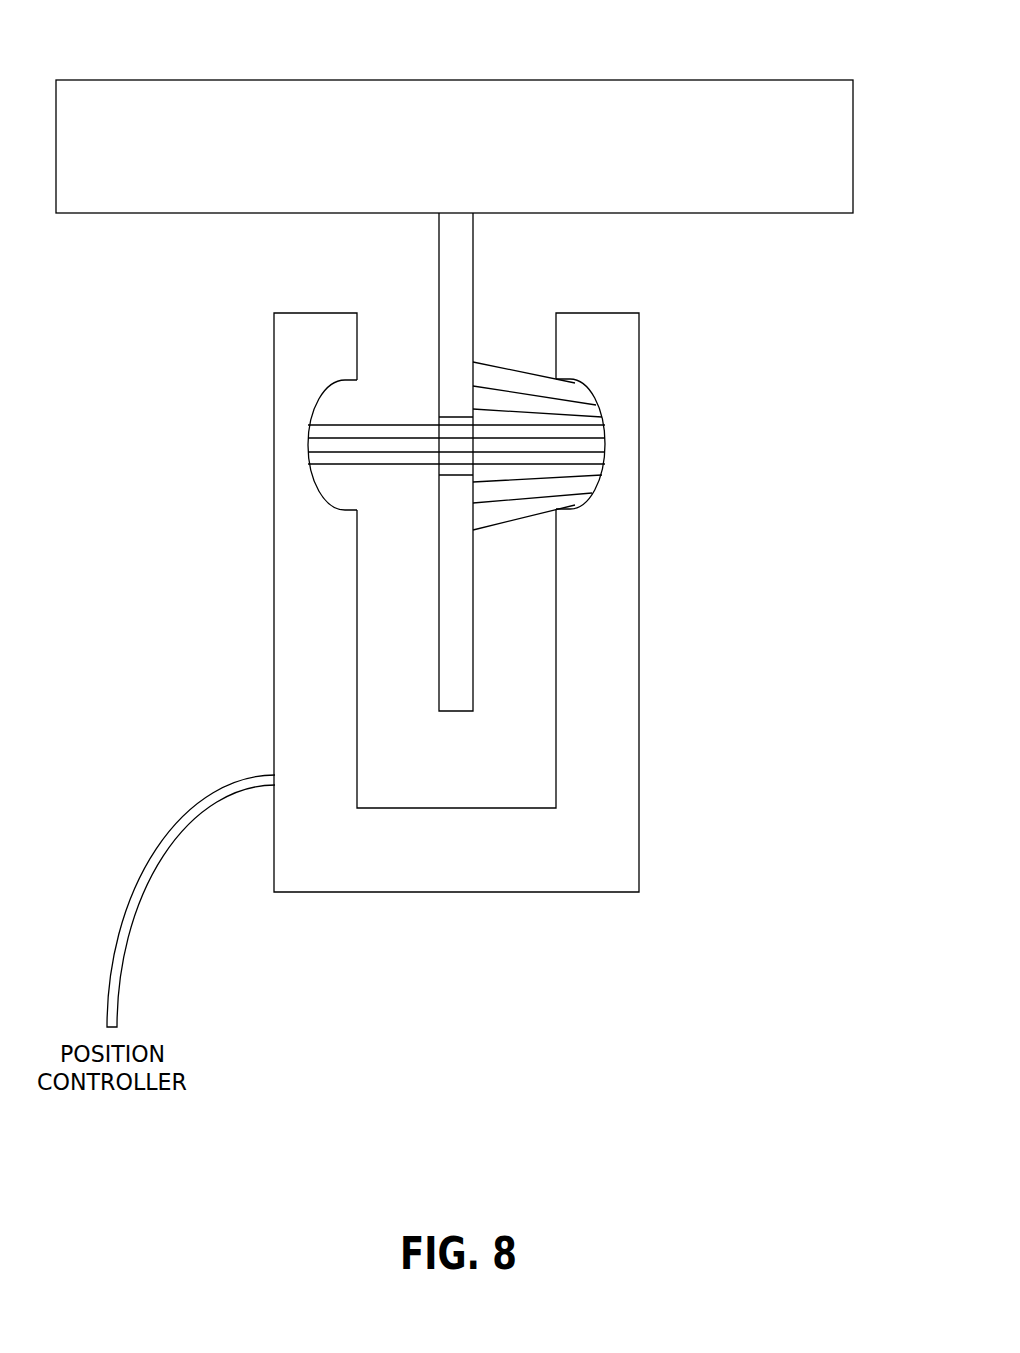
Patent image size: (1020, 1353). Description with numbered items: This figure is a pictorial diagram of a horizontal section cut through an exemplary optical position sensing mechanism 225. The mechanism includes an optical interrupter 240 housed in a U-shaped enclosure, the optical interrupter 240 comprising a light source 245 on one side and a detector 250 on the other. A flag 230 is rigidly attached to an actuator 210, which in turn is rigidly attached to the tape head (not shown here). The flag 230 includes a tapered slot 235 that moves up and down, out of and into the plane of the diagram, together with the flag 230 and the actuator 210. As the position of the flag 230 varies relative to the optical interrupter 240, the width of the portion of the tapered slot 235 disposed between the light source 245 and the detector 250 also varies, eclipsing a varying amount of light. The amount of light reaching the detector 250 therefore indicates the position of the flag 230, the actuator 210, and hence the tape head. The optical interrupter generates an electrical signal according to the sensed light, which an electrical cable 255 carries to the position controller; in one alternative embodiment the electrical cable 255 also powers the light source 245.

The actuator 210 is at (455, 78).
The optical position sensing mechanism 225 is at (482, 552).
The flag 230 is at (473, 262).
The tapered slot 235 is at (455, 443).
The optical interrupter 240 is at (639, 775).
The light source 245 is at (605, 442).
The detector 250 is at (306, 448).
The electrical cable 255 is at (158, 842).